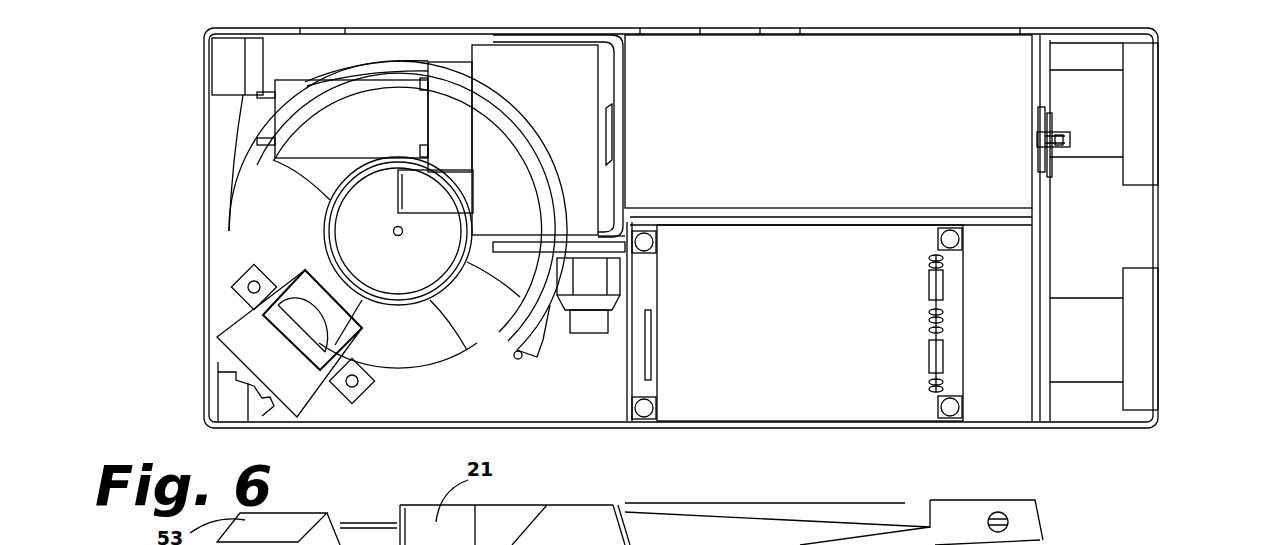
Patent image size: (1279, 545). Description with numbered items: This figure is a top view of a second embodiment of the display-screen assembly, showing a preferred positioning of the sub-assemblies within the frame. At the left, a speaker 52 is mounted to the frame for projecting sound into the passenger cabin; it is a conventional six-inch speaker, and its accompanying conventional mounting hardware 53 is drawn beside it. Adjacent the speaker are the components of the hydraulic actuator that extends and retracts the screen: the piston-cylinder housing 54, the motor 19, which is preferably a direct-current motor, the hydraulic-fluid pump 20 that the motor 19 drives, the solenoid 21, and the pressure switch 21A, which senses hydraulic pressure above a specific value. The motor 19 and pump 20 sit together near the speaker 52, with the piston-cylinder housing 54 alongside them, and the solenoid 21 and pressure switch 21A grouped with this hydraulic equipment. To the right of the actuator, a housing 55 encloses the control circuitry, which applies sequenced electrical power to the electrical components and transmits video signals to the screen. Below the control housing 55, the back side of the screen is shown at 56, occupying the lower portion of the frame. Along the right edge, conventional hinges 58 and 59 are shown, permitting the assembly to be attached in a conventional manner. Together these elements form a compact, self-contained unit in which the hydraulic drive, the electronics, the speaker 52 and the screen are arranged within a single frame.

The motor 19 is at (293, 130).
The hydraulic-fluid pump 20 is at (438, 124).
The solenoid 21 is at (424, 202).
The pressure switch 21A is at (597, 318).
The speaker 52 is at (277, 232).
The speaker hardware 53 is at (253, 350).
The piston-cylinder housing 54 is at (518, 148).
The control circuitry housing 55 is at (795, 135).
The back side of screen 56 is at (770, 350).
The hinge 58 is at (1150, 352).
The hinge 59 is at (1143, 123).